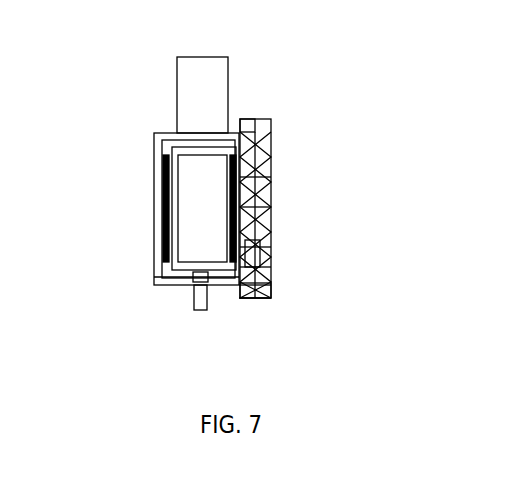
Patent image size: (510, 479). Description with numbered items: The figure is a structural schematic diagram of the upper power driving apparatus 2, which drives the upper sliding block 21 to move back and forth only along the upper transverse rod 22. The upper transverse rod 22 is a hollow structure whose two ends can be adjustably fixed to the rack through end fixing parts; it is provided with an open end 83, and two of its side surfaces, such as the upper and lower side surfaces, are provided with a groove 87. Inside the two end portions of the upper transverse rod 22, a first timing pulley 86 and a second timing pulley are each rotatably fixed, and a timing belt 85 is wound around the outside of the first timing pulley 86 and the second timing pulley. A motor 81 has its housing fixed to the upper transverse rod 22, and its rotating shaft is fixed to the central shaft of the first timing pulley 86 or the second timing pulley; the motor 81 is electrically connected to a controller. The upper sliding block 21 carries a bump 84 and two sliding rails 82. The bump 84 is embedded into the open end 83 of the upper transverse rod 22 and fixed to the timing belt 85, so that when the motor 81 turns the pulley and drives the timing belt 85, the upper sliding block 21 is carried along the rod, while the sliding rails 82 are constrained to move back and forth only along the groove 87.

The upper power driving apparatus 2 is at (110, 97).
The upper sliding block 21 is at (275, 305).
The upper transverse rod 22 is at (167, 138).
The motor 81 is at (210, 85).
The sliding rails 82 is at (252, 128).
The open end 83 is at (265, 167).
The bump 84 is at (272, 205).
The timing belt 85 is at (272, 245).
The first timing pulley 86 is at (272, 265).
The groove 87 is at (270, 290).